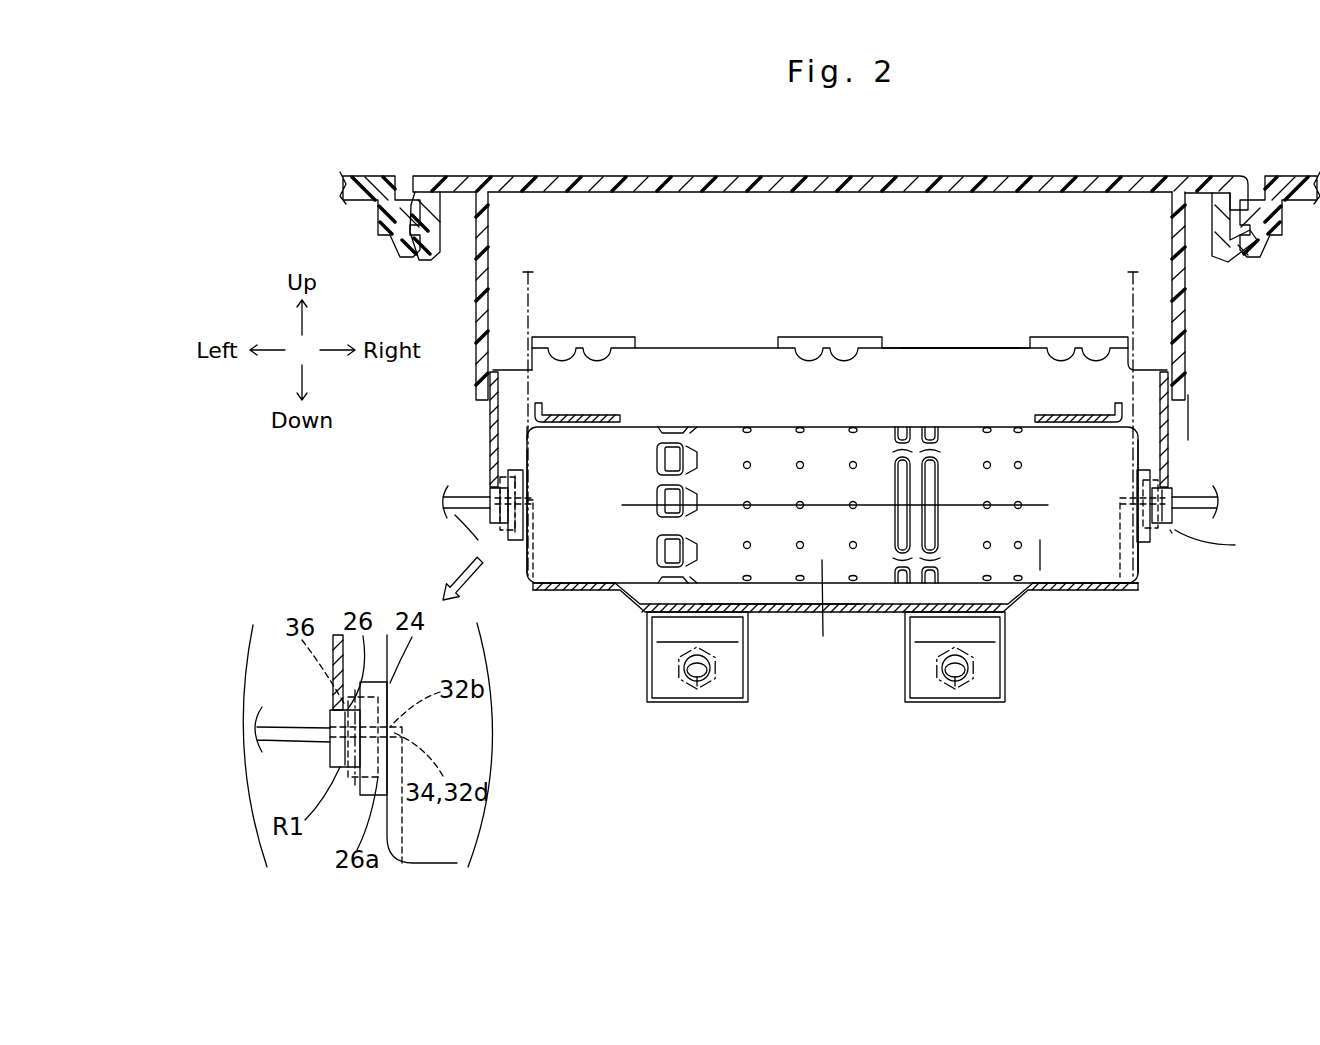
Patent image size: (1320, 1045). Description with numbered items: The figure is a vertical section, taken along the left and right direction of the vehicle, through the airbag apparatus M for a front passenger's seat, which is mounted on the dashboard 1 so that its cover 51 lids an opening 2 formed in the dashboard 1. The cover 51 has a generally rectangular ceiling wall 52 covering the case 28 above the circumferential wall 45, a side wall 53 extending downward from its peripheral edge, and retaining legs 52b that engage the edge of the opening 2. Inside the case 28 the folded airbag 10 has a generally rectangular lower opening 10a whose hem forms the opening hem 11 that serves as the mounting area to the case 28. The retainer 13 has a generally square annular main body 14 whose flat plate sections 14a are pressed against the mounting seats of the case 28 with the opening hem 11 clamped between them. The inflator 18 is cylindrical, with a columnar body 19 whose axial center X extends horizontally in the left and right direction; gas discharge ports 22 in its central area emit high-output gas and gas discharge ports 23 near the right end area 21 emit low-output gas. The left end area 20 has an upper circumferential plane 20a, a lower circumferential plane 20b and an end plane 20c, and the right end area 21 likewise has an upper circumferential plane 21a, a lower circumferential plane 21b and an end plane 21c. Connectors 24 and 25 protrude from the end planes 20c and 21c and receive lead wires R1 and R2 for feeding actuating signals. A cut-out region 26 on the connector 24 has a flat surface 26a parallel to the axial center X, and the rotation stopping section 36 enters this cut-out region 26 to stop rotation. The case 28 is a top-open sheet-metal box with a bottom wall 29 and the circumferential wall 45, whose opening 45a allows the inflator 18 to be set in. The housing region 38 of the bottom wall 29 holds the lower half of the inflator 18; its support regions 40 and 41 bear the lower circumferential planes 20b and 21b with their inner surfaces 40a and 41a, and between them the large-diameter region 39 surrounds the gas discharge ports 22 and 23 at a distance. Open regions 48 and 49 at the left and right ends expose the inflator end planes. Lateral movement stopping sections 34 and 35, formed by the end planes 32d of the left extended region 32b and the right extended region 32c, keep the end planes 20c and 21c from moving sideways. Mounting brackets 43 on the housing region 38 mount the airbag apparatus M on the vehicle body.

The dashboard 1 is at (367, 148).
The opening 2 is at (410, 190).
The airbag 10 is at (530, 310).
The opening 10a is at (632, 418).
The opening hem 11 is at (482, 300).
The retainer 13 is at (631, 354).
The main body 14 is at (631, 354).
The flat plate section 14a is at (613, 420).
The inflator 18 is at (878, 401).
The inflator body 19 is at (892, 440).
The end area 20 is at (614, 586).
The upper circumferential plane 20a is at (582, 420).
The lower circumferential plane 20b is at (602, 588).
The end plane 20c is at (527, 570).
The end area 21 is at (1080, 563).
The upper circumferential plane 21a is at (1080, 418).
The lower circumferential plane 21b is at (1062, 588).
The end plane 21c is at (1143, 540).
The gas discharge ports 22 is at (802, 462).
The gas discharge ports 23 is at (987, 502).
The connector 24 is at (512, 468).
The connector 25 is at (1142, 486).
The cut-out region 26 is at (488, 495).
The flat surface 26a is at (510, 527).
The case 28 is at (1206, 434).
The bottom wall 29 is at (885, 636).
The left extended region 32b is at (530, 500).
The right extended region 32c is at (1172, 492).
The end plane 32d is at (760, 498).
The lateral movement stopping section 34 is at (522, 482).
The lateral movement stopping section 35 is at (1135, 503).
The rotation stopping section 36 is at (492, 430).
The housing region 38 is at (835, 683).
The large-diameter region 39 is at (782, 613).
The support region 40 is at (580, 572).
The inner surface 40a is at (592, 572).
The support region 41 is at (1117, 590).
The inner surface 41a is at (1050, 583).
The mounting bracket 43 is at (733, 680).
The circumferential wall 45 is at (1170, 418).
The opening 45a is at (990, 357).
The open region 48 is at (538, 588).
The open region 49 is at (1140, 585).
The cover 51 is at (658, 157).
The ceiling wall 52 is at (695, 178).
The retaining leg 52b is at (1247, 252).
The side wall 53 is at (480, 250).
The lead wire R1 is at (492, 518).
The lead wire R2 is at (1172, 522).
The airbag apparatus M is at (1224, 551).
The axial center X is at (825, 611).